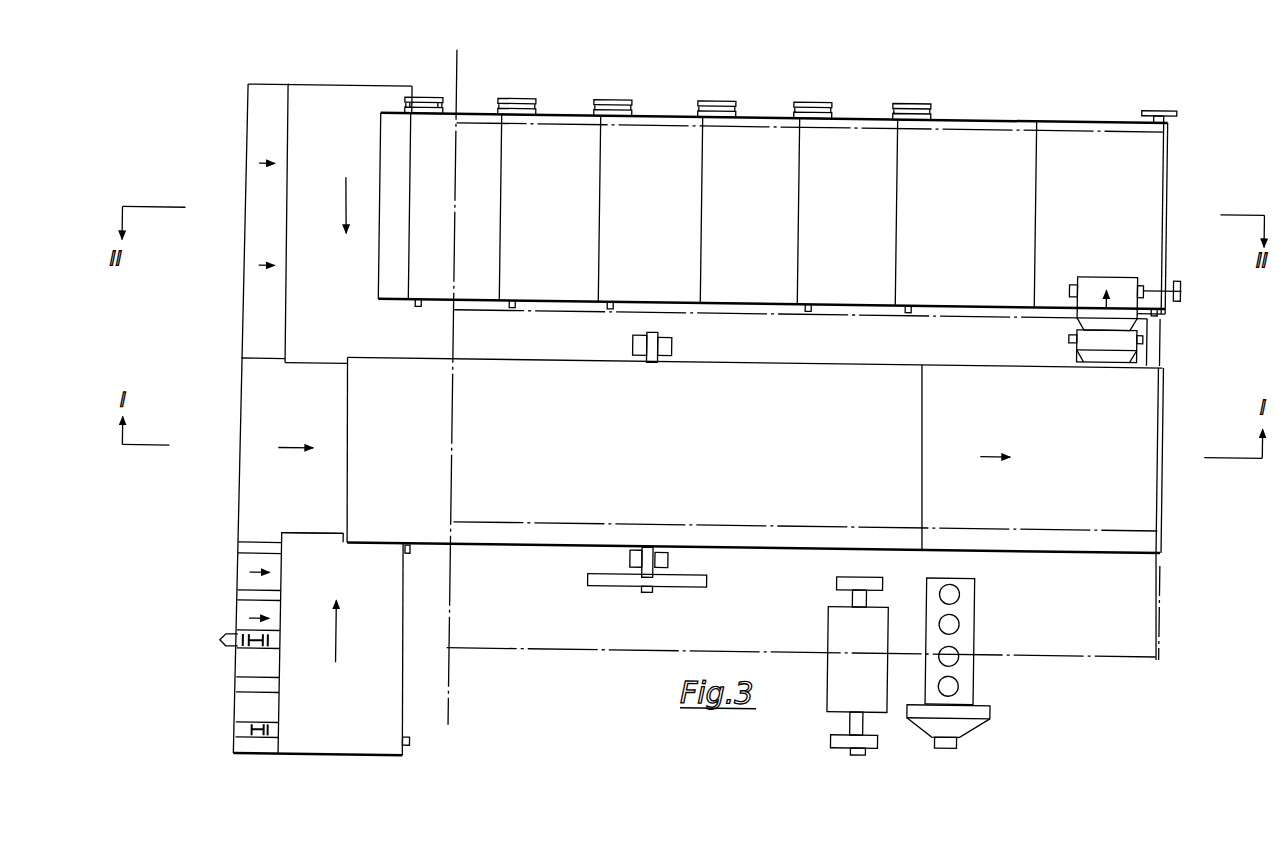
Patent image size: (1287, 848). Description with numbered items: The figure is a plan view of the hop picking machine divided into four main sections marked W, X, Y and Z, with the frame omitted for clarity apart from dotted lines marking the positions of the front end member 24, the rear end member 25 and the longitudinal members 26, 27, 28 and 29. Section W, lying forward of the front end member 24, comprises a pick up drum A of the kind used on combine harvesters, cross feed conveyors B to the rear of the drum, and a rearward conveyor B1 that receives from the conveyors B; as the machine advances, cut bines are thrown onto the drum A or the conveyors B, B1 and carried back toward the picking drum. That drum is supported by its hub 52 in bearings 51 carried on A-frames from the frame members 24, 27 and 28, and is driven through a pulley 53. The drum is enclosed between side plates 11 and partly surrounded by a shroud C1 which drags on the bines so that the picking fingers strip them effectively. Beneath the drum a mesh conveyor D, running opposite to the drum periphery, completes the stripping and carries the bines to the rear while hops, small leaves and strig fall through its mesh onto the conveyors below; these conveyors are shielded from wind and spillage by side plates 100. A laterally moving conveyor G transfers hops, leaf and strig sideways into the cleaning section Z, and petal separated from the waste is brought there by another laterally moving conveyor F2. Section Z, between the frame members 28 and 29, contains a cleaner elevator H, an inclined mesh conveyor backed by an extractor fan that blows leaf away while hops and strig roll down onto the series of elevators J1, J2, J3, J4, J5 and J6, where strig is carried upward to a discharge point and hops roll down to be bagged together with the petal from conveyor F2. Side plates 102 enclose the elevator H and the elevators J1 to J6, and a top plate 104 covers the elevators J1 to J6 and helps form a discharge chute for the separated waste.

The side plates 11 is at (883, 357).
The front end member 24 is at (452, 680).
The rear end member 25 is at (1160, 606).
The longitudinal member 26 is at (1074, 651).
The longitudinal member 27 is at (1086, 525).
The longitudinal member 28 is at (999, 311).
The longitudinal member 29 is at (973, 126).
The bearings 51 is at (670, 344).
The hub 52 is at (650, 329).
The pulley 53 is at (632, 579).
The side plates 100 is at (1022, 361).
The side plates 102 is at (756, 115).
The top plate 104 is at (376, 241).
The pick up drum A is at (248, 239).
The cross feed conveyors B is at (303, 115).
The rearward conveyor B1 is at (250, 426).
The shroud C1 is at (702, 425).
The conveyor D is at (994, 458).
The laterally moving conveyor G is at (1113, 278).
The laterally moving conveyor F2 is at (1146, 339).
The cleaner elevator H is at (1078, 213).
The elevator J1 is at (984, 210).
The elevator J2 is at (860, 211).
The elevator J3 is at (732, 212).
The elevator J4 is at (663, 213).
The elevator J5 is at (563, 212).
The elevator J6 is at (447, 212).
The section W is at (229, 466).
The section X is at (645, 658).
The section Y is at (1170, 416).
The section Z is at (1167, 191).